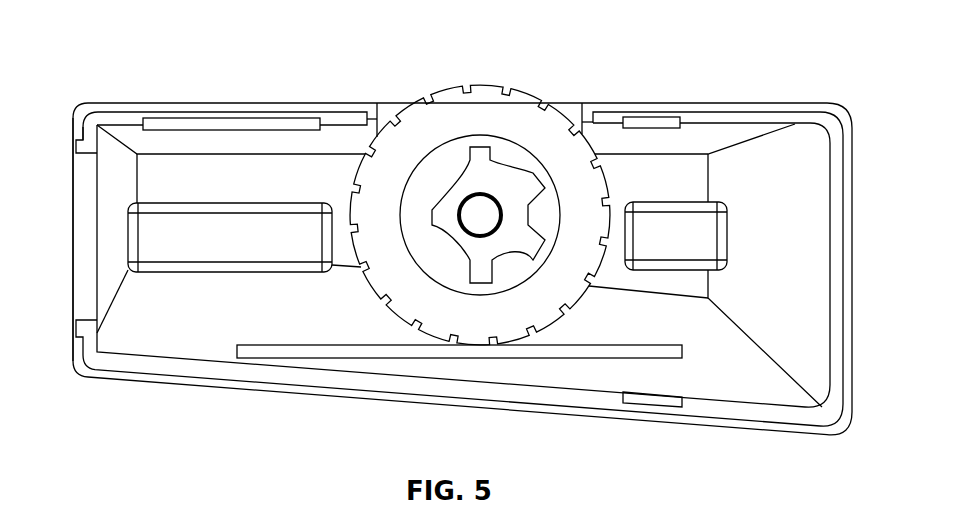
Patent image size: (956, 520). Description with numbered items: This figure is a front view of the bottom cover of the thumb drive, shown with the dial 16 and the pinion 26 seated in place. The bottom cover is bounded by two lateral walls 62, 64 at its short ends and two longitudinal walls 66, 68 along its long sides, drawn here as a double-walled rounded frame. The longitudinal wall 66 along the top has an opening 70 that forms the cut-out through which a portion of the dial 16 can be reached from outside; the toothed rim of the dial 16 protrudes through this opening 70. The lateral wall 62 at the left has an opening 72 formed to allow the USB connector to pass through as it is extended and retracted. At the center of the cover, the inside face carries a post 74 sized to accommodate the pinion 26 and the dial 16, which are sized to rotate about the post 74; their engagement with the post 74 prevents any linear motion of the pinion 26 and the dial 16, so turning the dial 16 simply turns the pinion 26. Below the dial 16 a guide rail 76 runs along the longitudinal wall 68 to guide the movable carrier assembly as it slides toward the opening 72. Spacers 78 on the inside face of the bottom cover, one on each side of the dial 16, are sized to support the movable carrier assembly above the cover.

The dial 16 is at (447, 98).
The pinion 26 is at (478, 167).
The lateral wall 62 is at (77, 137).
The lateral wall 64 is at (847, 253).
The longitudinal wall 66 is at (227, 110).
The longitudinal wall 68 is at (283, 385).
The opening 70 is at (388, 107).
The opening 72 is at (80, 217).
The post 74 is at (488, 213).
The guide rail 76 is at (457, 360).
The spacers 78 is at (195, 247).